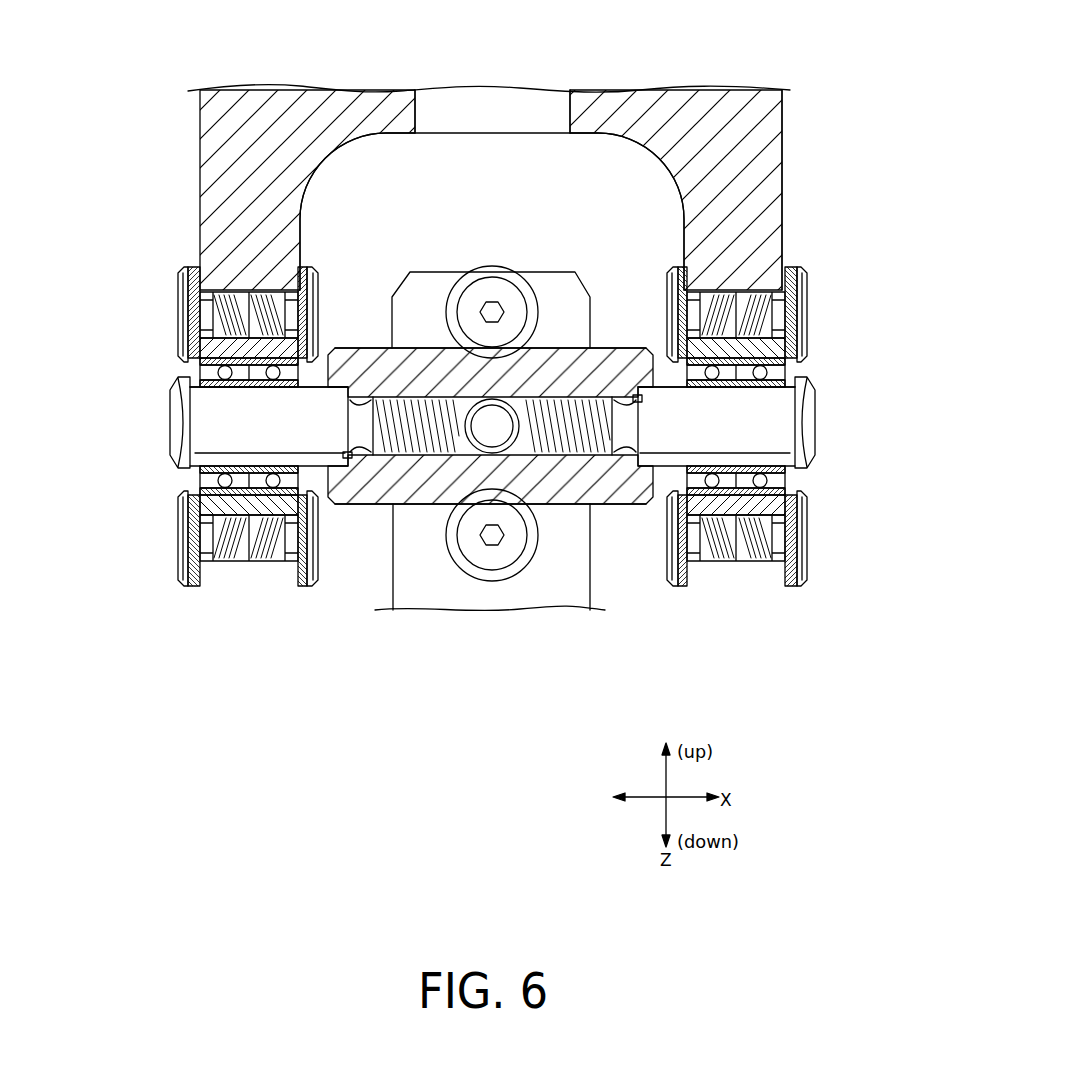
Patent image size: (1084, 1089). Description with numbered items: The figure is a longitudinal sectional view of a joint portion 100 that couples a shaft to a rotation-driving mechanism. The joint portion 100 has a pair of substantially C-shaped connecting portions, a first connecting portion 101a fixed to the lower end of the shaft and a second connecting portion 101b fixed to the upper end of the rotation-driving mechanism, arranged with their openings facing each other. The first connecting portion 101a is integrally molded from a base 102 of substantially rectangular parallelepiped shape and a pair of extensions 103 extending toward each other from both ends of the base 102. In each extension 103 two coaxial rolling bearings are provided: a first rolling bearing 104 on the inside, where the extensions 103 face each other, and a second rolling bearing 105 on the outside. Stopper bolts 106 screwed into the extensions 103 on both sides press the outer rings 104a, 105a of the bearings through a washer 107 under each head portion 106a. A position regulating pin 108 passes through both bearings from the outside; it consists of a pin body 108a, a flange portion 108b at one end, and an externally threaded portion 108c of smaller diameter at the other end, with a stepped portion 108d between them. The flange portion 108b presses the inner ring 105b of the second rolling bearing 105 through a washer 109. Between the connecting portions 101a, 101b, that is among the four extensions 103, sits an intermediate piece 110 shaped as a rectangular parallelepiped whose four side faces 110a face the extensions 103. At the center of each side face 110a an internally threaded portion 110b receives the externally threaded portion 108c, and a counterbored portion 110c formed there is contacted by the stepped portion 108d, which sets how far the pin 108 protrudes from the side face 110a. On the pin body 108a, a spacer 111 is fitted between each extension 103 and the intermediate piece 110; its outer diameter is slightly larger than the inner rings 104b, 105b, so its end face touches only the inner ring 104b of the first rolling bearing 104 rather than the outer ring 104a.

The joint portion 100 is at (812, 110).
The first connecting portion 101a is at (785, 163).
The second connecting portion 101b is at (378, 587).
The base 102 is at (382, 130).
The extension 103 is at (205, 190).
The first rolling bearing 104 is at (265, 562).
The outer ring 104a is at (292, 500).
The inner ring 104b is at (282, 386).
The second rolling bearing 105 is at (225, 495).
The outer ring 105a is at (200, 492).
The inner ring 105b is at (200, 475).
The stopper bolt 106 is at (270, 300).
The head portion 106a is at (490, 275).
The washer 107 is at (183, 273).
The position regulating pin 108 is at (170, 425).
The pin body 108a is at (347, 393).
The flange portion 108b is at (171, 448).
The externally threaded portion 108c is at (398, 330).
The stepped portion 108d is at (418, 395).
The washer 109 is at (195, 372).
The intermediate piece 110 is at (550, 512).
The side face 110a is at (333, 350).
The internally threaded portion 110b is at (585, 507).
The counterbored portion 110c is at (645, 395).
The spacer 111 is at (310, 390).